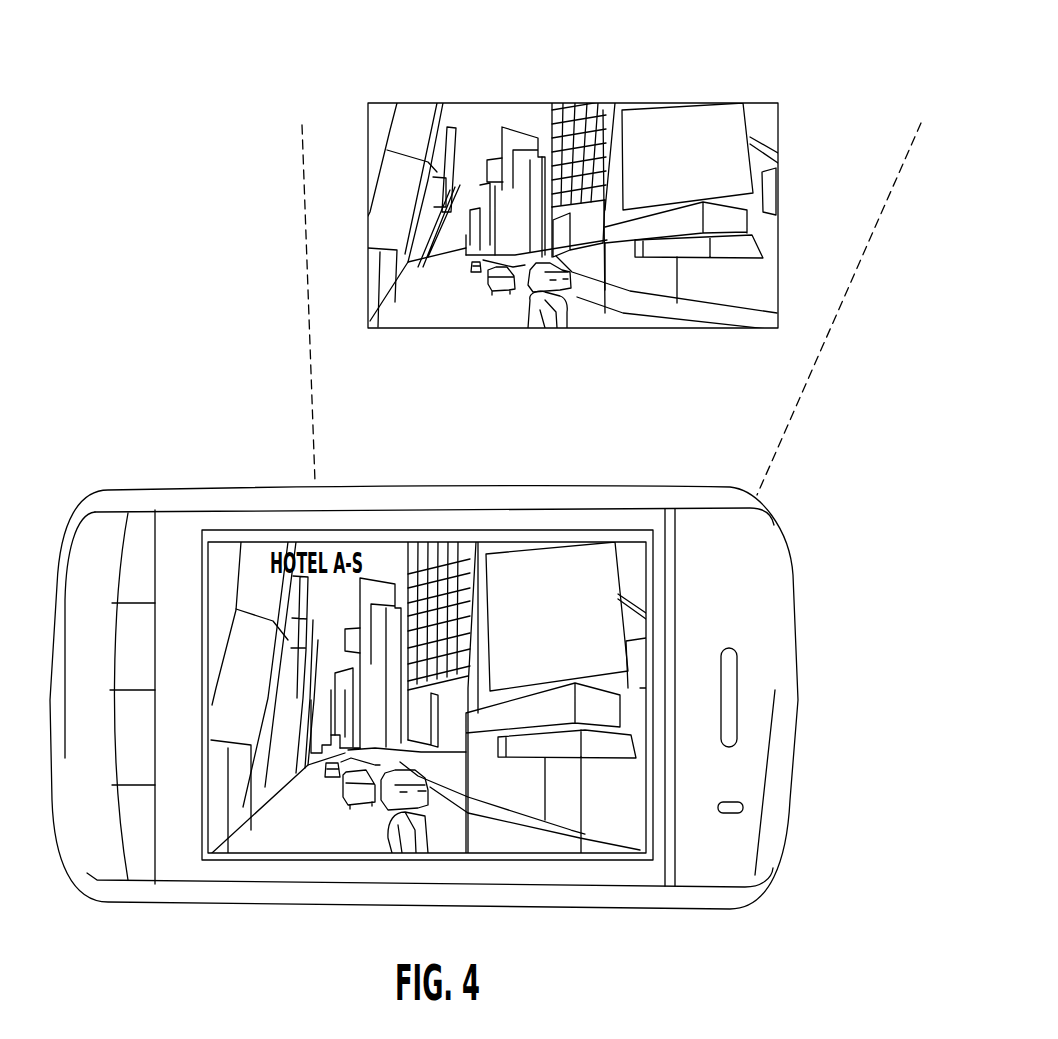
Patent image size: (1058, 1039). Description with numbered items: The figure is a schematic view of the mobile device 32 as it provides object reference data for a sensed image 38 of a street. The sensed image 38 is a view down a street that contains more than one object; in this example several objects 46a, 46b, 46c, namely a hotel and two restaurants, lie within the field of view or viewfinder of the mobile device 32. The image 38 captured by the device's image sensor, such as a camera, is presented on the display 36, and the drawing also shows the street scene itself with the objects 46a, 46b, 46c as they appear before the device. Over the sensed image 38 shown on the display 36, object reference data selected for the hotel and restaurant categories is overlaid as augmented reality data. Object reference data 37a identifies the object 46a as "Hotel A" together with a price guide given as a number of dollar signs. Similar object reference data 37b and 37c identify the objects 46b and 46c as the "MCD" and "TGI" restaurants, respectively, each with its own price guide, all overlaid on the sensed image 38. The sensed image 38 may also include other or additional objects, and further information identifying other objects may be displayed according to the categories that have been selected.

The mobile device 32 is at (792, 574).
The display 36 is at (600, 853).
The object reference data 37a is at (340, 697).
The object reference data 37b is at (583, 573).
The object reference data 37c is at (613, 635).
The sensed image 38 is at (368, 853).
The object 46a is at (488, 215).
The object 46b is at (603, 163).
The object 46c is at (645, 227).